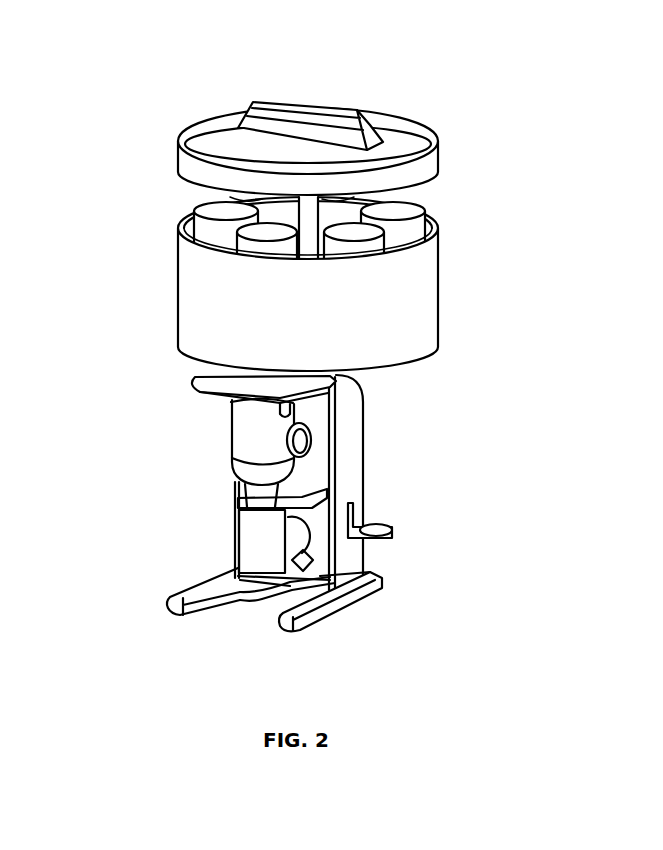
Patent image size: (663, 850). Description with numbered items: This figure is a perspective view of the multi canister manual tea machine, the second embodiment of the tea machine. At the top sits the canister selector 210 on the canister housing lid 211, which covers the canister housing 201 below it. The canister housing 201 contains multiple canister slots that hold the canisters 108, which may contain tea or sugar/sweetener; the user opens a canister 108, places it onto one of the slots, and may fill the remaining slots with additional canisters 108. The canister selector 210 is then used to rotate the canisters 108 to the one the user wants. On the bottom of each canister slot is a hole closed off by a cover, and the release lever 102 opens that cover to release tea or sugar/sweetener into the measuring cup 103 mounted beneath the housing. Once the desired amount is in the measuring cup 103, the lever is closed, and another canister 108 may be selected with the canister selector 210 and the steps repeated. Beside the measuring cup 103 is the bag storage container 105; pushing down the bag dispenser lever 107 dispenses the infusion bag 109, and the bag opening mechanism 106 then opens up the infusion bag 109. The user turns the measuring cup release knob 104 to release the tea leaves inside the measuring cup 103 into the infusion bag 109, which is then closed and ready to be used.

The release lever 102 is at (338, 388).
The measuring cup 103 is at (238, 437).
The measuring cup release knob 104 is at (312, 438).
The bag storage container 105 is at (320, 467).
The bag opening mechanism 106 is at (322, 502).
The bag dispenser lever 107 is at (393, 531).
The canisters 108 is at (408, 208).
The infusion bag 109 is at (247, 540).
The canister housing 201 is at (213, 292).
The canister selector 210 is at (362, 110).
The canister housing lid 211 is at (192, 167).